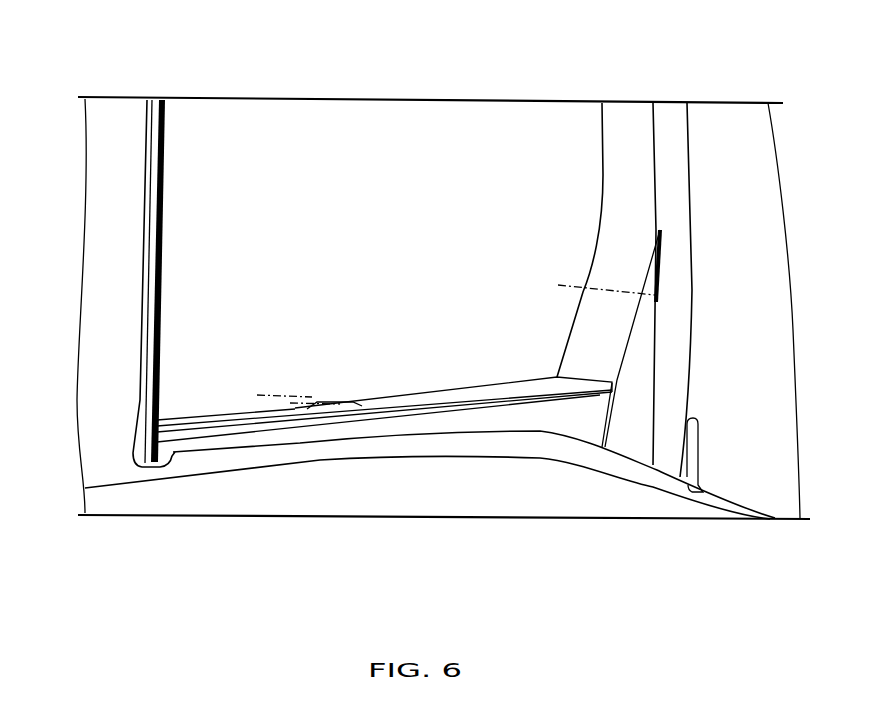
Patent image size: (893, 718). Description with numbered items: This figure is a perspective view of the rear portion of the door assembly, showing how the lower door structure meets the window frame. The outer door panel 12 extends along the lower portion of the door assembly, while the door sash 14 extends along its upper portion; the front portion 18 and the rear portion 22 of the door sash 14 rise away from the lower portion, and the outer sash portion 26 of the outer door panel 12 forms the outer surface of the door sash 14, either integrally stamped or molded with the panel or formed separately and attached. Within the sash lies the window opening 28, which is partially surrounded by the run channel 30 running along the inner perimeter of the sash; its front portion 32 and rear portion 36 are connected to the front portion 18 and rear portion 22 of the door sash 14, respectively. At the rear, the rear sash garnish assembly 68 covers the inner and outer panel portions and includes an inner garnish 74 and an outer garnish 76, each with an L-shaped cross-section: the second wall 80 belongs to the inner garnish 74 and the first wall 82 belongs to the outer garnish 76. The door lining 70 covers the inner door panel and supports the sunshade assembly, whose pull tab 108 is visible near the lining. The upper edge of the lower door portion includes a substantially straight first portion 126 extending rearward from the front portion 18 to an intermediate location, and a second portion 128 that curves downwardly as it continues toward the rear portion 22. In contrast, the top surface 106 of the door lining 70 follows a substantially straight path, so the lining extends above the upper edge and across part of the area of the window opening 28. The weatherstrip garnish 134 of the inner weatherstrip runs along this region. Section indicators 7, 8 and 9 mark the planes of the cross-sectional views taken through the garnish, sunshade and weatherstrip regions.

The section line of FIG. 7 is at (562, 297).
The section line of FIG. 8 is at (258, 408).
The section line of FIG. 9 is at (288, 415).
The outer door panel 12 is at (367, 503).
The door sash 14 is at (802, 130).
The front portion 18 is at (357, 269).
The rear portion 22 is at (778, 340).
The outer sash portion 26 is at (110, 140).
The window opening 28 is at (392, 252).
The run channel 30 is at (225, 281).
The front portion 32 is at (165, 170).
The rear portion 36 is at (675, 242).
The rear sash garnish assembly 68 is at (570, 173).
The door lining 70 is at (197, 417).
The inner garnish 74 is at (602, 133).
The outer garnish 76 is at (729, 361).
The second wall 80 is at (638, 182).
The first wall 82 is at (668, 397).
The top surface 106 is at (490, 390).
The pull tab 108 is at (333, 397).
The first portion 126 is at (187, 455).
The second portion 128 is at (577, 452).
The weatherstrip garnish 134 is at (537, 413).